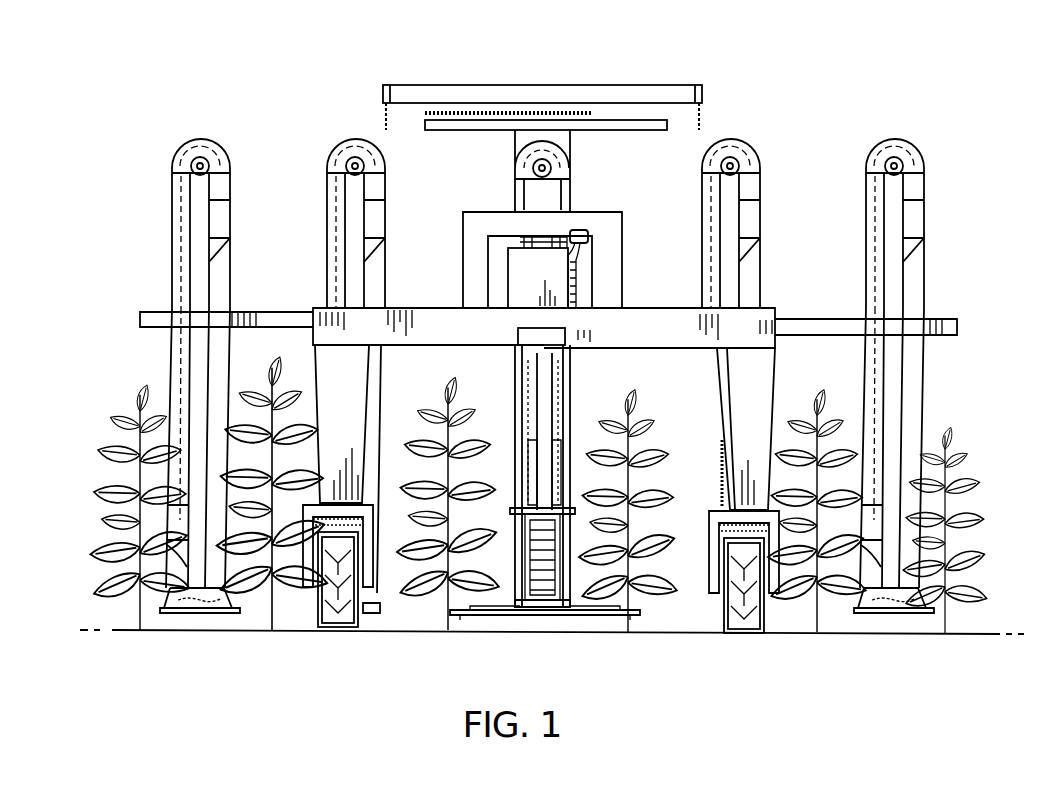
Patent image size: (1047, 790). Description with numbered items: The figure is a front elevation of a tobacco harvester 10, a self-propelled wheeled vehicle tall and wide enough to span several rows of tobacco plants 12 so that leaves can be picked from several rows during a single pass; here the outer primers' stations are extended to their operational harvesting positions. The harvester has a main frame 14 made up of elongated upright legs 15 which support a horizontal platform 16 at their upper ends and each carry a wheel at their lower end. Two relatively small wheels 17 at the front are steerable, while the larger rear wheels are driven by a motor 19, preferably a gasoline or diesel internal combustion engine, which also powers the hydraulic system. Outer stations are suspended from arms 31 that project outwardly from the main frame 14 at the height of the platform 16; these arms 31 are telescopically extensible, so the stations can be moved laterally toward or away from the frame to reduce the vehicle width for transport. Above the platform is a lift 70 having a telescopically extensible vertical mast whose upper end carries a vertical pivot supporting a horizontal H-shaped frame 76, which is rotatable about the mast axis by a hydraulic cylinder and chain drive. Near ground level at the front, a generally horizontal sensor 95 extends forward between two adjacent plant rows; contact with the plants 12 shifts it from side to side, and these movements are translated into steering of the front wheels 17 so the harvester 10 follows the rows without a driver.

The harvester 10 is at (344, 102).
The tobacco plants 12 is at (112, 555).
The main frame 14 is at (447, 330).
The upright legs 15 is at (348, 440).
The horizontal platform 16 is at (668, 318).
The small wheels 17 is at (358, 626).
The motor 19 is at (541, 284).
The arms 31 is at (278, 318).
The lift 70 is at (647, 80).
The H-shaped frame 76 is at (460, 80).
The sensor 95 is at (590, 615).